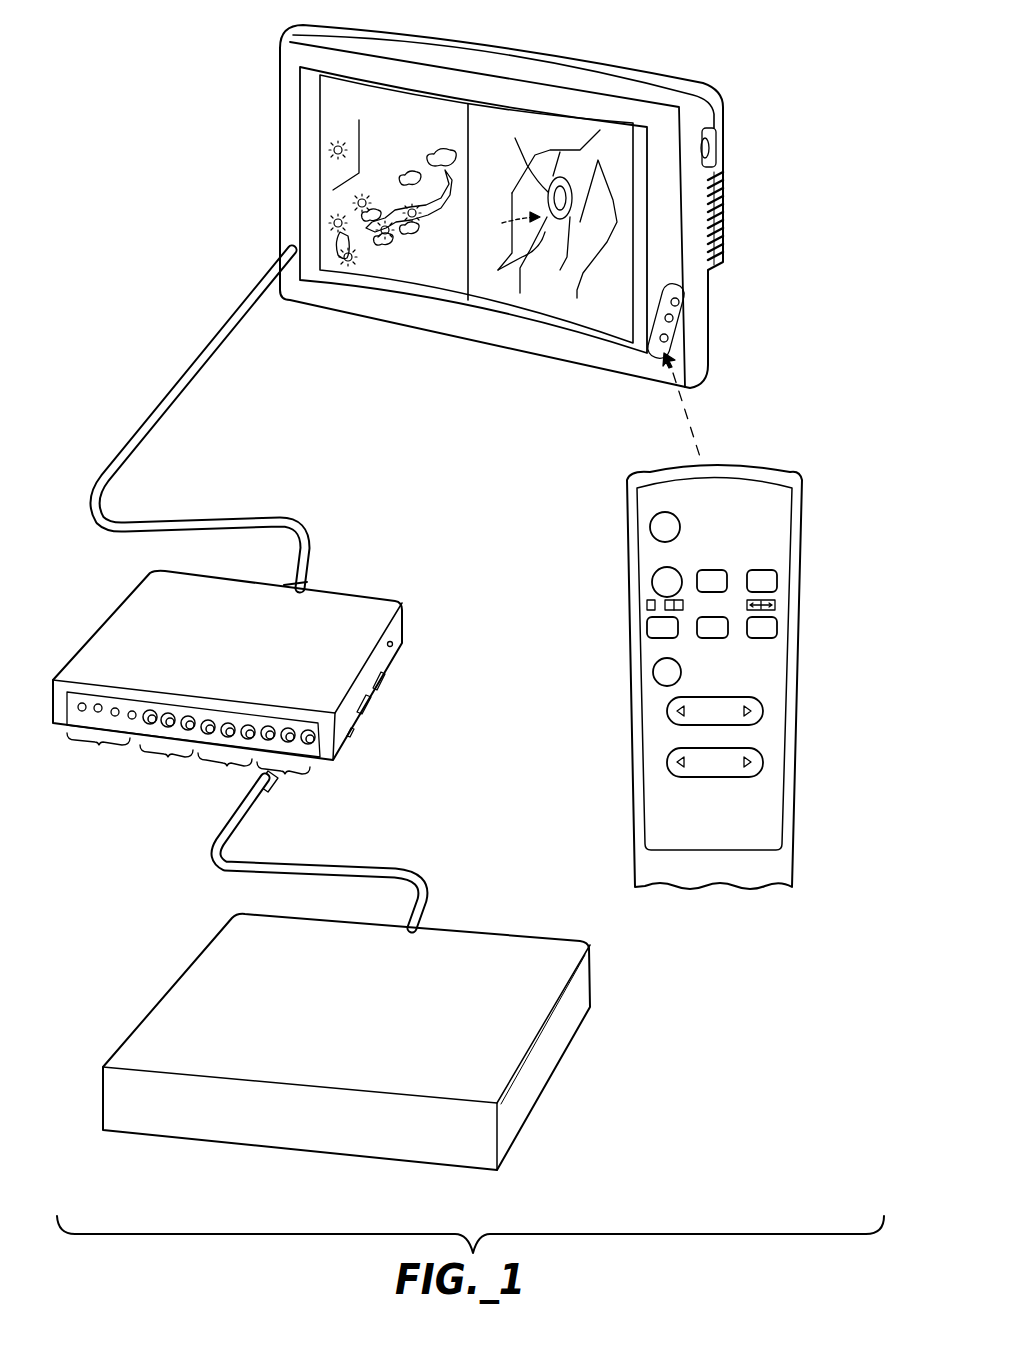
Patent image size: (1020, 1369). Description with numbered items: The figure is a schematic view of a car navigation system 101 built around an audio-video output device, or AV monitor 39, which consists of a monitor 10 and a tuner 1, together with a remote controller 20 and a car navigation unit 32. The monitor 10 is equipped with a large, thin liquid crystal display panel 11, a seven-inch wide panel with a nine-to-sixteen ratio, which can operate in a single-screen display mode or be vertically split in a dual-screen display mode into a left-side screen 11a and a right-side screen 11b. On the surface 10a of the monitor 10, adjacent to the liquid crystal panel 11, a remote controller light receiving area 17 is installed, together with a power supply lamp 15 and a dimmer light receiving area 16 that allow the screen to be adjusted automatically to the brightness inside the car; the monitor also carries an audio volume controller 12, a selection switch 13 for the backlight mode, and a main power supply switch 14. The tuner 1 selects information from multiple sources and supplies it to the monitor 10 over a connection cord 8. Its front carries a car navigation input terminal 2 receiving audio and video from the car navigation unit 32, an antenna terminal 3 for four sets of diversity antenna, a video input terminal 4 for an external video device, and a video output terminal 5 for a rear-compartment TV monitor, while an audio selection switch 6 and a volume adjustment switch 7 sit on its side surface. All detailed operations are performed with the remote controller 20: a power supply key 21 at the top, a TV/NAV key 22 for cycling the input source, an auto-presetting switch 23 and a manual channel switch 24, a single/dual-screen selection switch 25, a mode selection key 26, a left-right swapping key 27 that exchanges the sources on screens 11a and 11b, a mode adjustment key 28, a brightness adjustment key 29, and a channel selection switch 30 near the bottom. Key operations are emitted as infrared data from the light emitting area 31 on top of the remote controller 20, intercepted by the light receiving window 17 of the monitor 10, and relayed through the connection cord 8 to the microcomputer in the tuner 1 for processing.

The tuner 1 is at (108, 613).
The car navigation input terminal 2 is at (319, 827).
The antenna terminal 3 is at (101, 739).
The video input terminal 4 is at (226, 756).
The video output terminal 5 is at (167, 747).
The audio selection switch 6 is at (379, 686).
The volume adjustment switch 7 is at (370, 704).
The connection cord 8 is at (218, 330).
The monitor 10 is at (686, 70).
The surface of monitor 10a is at (308, 143).
The liquid crystal display panel 11 is at (546, 108).
The left-side screen 11a is at (413, 92).
The right-side screen 11b is at (482, 115).
The audio volume controller 12 is at (716, 150).
The selection switch 13 is at (727, 197).
The main power supply switch 14 is at (727, 220).
The power supply lamp 15 is at (679, 303).
The dimmer light receiving area 16 is at (673, 318).
The remote controller light receiving area 17 is at (668, 338).
The remote controller 20 is at (790, 470).
The power supply key 21 is at (658, 533).
The TV/NAV key 22 is at (663, 582).
The auto-presetting switch 23 is at (713, 582).
The manual channel selection switch 24 is at (770, 578).
The single/dual-screen selection switch 25 is at (658, 628).
The mode selection key 26 is at (713, 630).
The left-right swapping key 27 is at (763, 628).
The mode adjustment key 28 is at (663, 673).
The brightness adjustment key 29 is at (702, 715).
The channel selection switch 30 is at (713, 767).
The remote controller light emitting area 31 is at (690, 432).
The car navigation unit 32 is at (158, 1003).
The audio-video output device (AV monitor) 39 is at (776, 165).
The car navigation system 101 is at (705, 944).